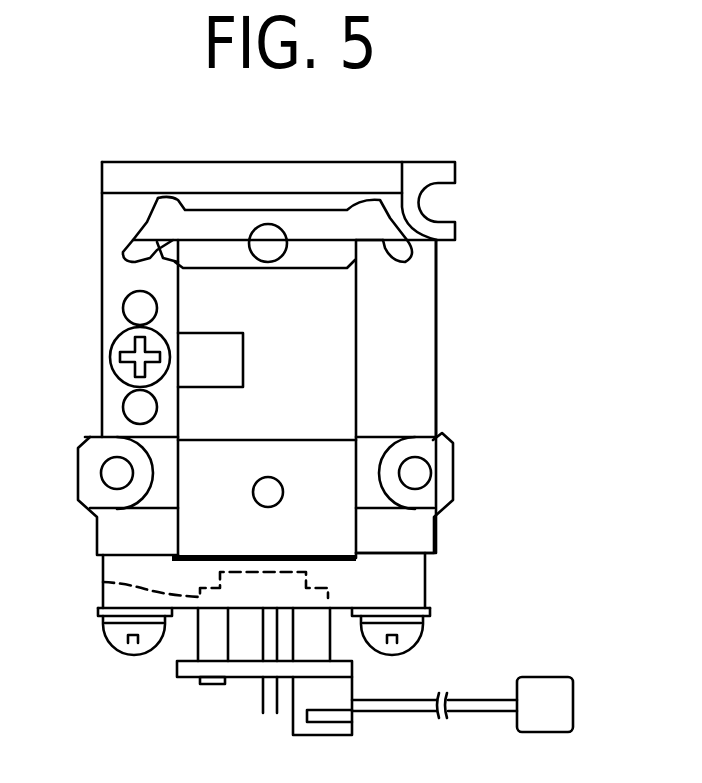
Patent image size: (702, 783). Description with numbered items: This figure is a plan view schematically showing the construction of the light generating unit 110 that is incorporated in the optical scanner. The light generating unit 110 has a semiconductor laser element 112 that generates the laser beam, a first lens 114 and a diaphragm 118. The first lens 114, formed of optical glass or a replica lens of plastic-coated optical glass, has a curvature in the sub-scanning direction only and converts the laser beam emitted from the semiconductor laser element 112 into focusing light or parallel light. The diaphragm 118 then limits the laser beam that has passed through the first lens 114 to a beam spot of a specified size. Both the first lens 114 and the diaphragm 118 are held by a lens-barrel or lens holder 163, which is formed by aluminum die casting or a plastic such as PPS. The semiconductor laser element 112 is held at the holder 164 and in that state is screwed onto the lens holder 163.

The light generating unit 110 is at (490, 167).
The semiconductor laser element 112 is at (103, 582).
The first lens 114 is at (346, 393).
The diaphragm 118 is at (115, 254).
The lens holder 163 is at (424, 313).
The holder 164 is at (413, 591).